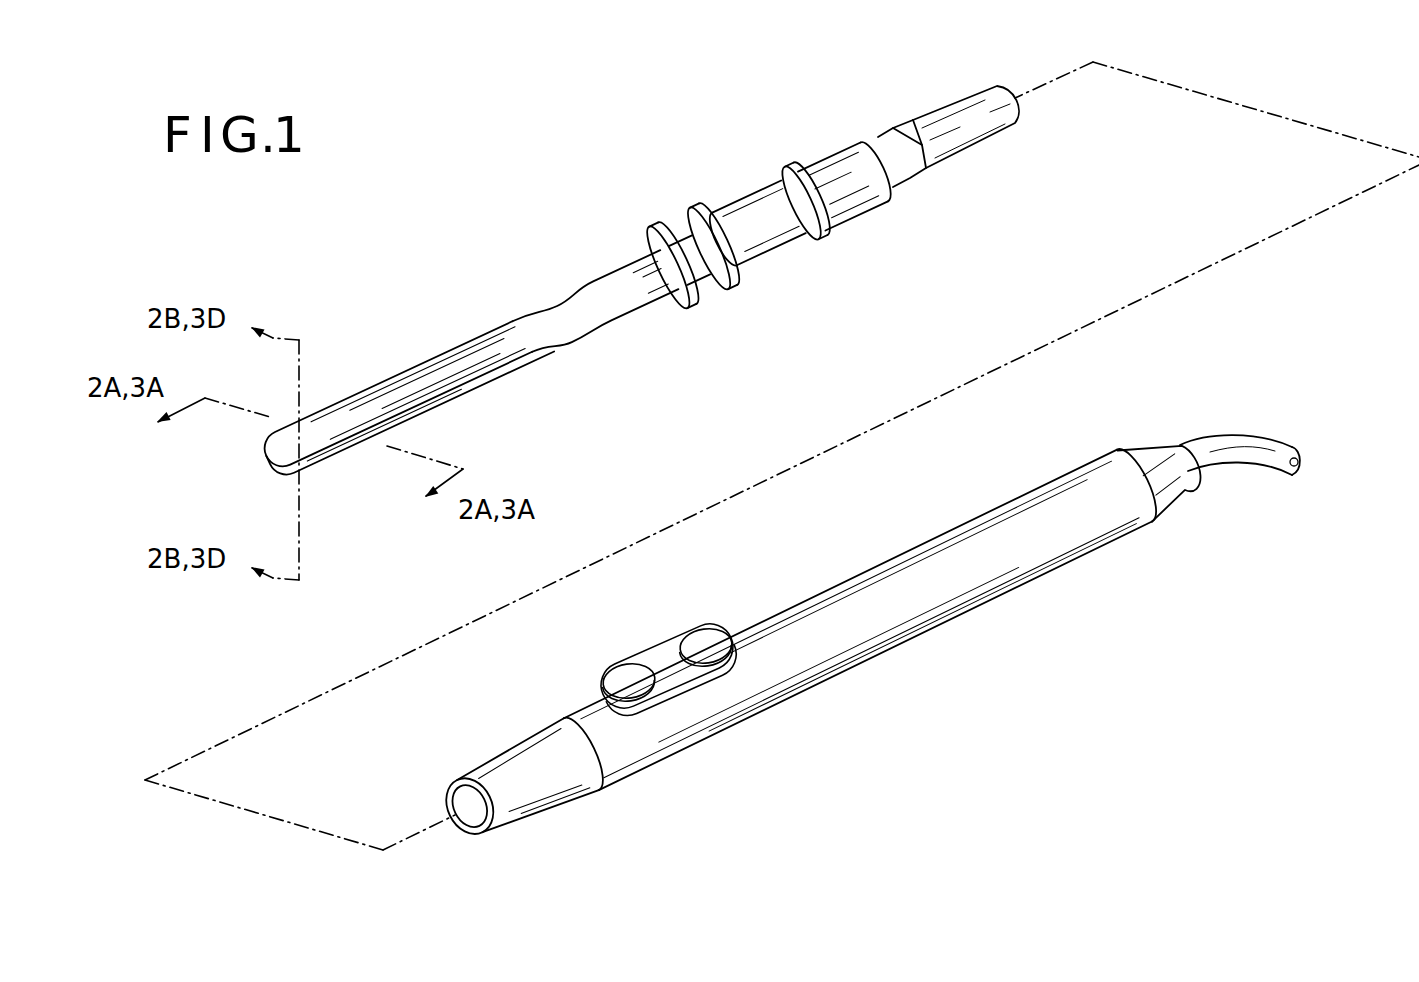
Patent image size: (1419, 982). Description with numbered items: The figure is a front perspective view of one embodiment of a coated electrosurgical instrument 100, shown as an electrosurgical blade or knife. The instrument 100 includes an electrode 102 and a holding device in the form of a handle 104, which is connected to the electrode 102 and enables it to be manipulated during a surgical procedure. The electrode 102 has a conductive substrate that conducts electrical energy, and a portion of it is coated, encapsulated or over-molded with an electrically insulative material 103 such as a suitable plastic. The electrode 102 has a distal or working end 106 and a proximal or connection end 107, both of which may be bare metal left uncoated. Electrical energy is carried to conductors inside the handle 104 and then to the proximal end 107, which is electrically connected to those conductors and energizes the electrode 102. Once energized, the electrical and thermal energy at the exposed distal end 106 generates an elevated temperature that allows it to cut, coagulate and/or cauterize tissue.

The coated electrosurgical instrument 100 is at (514, 236).
The electrode 102 is at (393, 400).
The electrically insulative material 103 is at (756, 190).
The handle 104 is at (915, 650).
The distal end 106 is at (364, 373).
The proximal end 107 is at (935, 100).